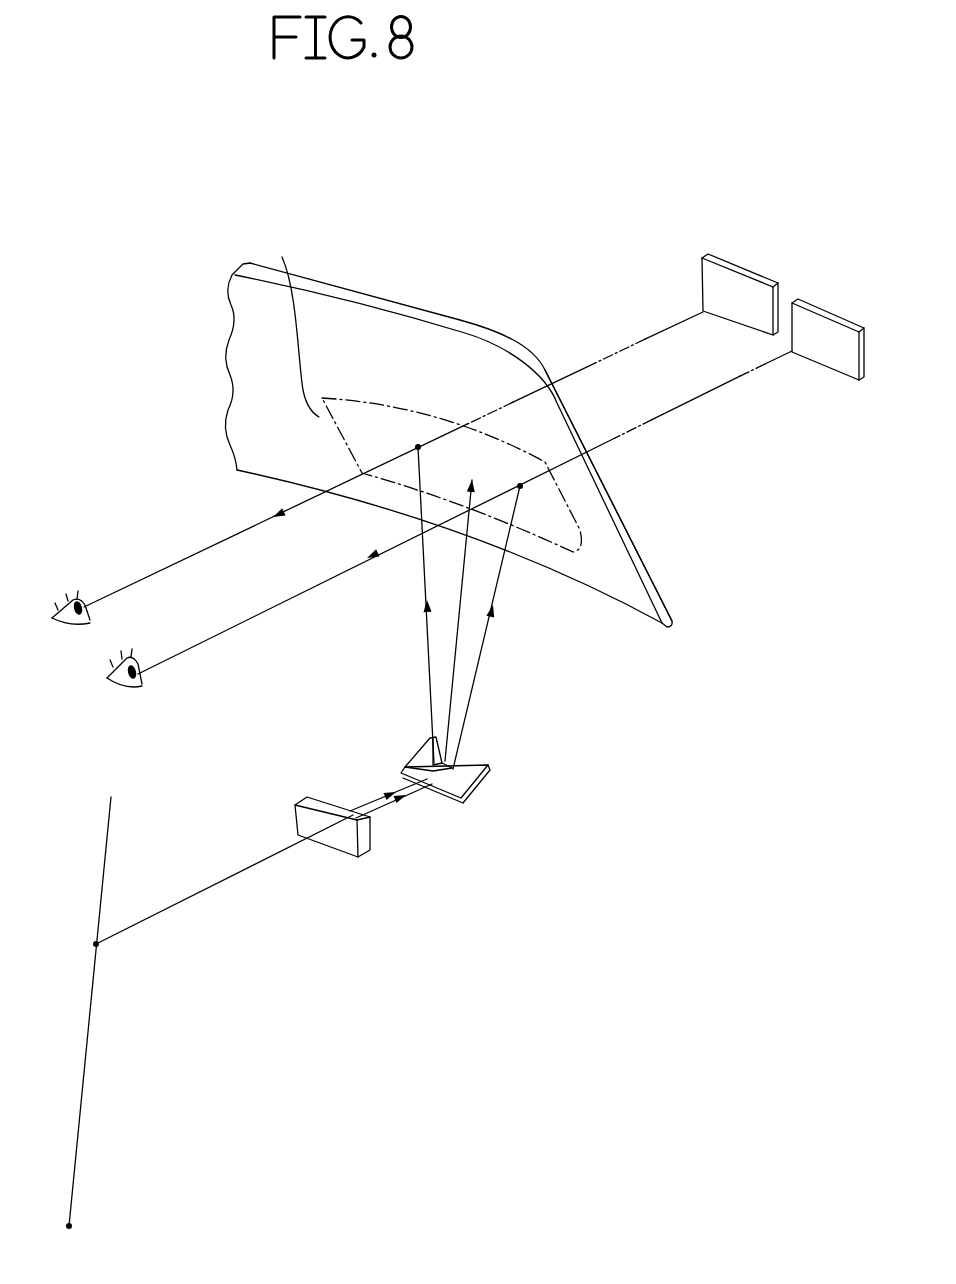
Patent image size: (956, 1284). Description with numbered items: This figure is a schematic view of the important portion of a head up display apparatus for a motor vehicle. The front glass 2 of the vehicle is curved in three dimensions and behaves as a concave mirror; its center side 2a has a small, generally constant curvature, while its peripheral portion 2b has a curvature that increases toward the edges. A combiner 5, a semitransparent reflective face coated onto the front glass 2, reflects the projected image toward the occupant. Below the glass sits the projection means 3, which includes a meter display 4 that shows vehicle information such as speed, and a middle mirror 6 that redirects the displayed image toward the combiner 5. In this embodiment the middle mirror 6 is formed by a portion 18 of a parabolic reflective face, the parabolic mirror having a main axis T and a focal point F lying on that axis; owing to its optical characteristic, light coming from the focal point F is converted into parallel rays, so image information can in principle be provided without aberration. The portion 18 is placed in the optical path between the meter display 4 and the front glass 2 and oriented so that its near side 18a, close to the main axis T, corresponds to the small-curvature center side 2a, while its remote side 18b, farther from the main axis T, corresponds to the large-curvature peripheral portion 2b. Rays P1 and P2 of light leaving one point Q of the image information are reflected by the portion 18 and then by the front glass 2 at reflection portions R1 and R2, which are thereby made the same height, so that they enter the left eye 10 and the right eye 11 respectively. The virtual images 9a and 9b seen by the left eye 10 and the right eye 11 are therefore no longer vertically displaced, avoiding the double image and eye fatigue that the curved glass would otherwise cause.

The front glass 2 is at (394, 330).
The center side of the front glass 2a is at (294, 326).
The peripheral portion of the front glass 2b is at (587, 505).
The projection means 3 is at (385, 865).
The meter display 4 is at (336, 847).
The combiner 5 is at (355, 396).
The middle mirror 6 is at (405, 840).
The virtual image on the left-eye side 9a is at (743, 276).
The virtual image on the right-eye side 9b is at (814, 311).
The left eye 10 is at (63, 590).
The right eye 11 is at (118, 689).
The portion of the parabolic reflective face 18 is at (449, 755).
The near side of the reflective face portion 18a is at (426, 758).
The remote side of the reflective face portion 18b is at (470, 777).
The reflection portion R1 is at (418, 445).
The reflection portion R2 is at (520, 484).
The luminous flux P1 is at (390, 789).
The luminous flux P2 is at (392, 807).
The one point on the image information Q is at (318, 833).
The focal point F is at (100, 948).
The reference point G is at (79, 1228).
The main axis T is at (108, 836).